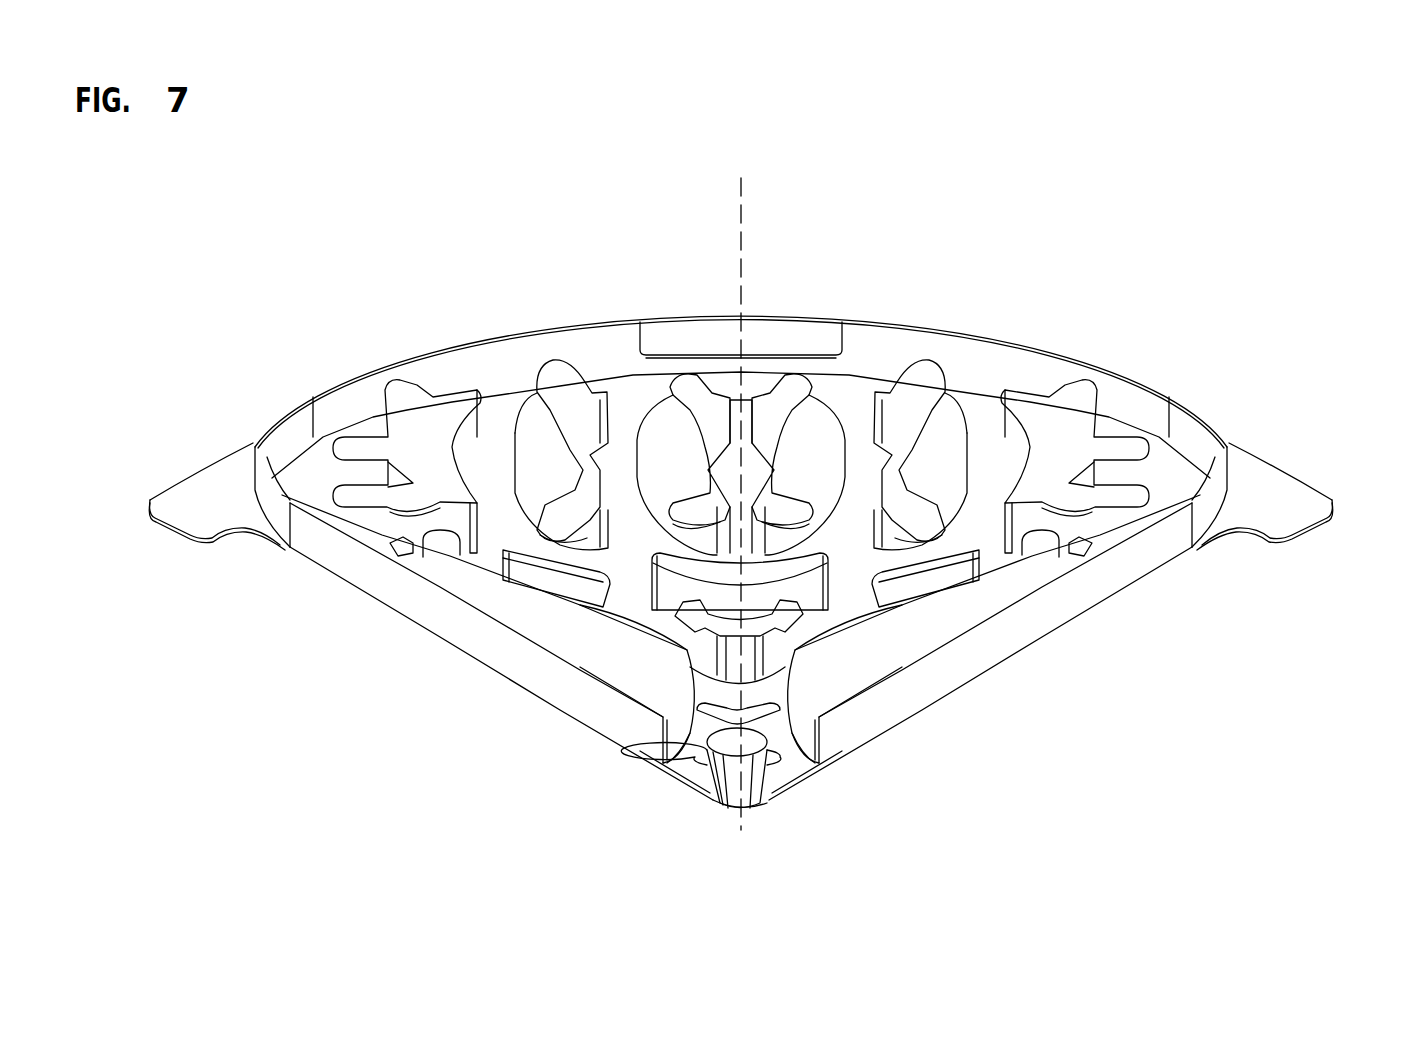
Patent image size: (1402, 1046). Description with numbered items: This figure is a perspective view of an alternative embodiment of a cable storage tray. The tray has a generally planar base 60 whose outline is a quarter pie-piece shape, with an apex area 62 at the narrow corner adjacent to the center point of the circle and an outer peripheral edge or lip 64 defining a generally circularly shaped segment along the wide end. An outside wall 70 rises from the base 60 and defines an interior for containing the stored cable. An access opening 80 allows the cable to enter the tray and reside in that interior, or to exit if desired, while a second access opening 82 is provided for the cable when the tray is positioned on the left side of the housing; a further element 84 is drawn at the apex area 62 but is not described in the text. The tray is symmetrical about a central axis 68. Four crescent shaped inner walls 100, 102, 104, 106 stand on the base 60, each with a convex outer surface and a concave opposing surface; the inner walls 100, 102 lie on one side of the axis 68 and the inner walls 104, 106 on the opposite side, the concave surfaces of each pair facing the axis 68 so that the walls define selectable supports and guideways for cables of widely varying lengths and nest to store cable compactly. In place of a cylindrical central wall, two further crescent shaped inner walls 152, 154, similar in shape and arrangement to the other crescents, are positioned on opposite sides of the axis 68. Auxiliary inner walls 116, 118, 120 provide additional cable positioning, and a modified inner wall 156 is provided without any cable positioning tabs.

The base 60 is at (1283, 477).
The apex area 62 is at (747, 807).
The outer peripheral edge or lip 64 is at (207, 470).
The central axis 68 is at (743, 210).
The outside wall 70 is at (1083, 600).
The access opening 80 is at (687, 767).
The second access opening 82 is at (794, 768).
The center post 84 is at (720, 787).
The crescent shaped inner wall 100 is at (431, 435).
The crescent shaped inner wall 102 is at (558, 432).
The crescent shaped inner wall 104 is at (932, 435).
The crescent shaped inner wall 106 is at (1063, 440).
The auxiliary inner wall 116 is at (549, 575).
The auxiliary inner wall 118 is at (947, 580).
The auxiliary inner wall 120 is at (700, 647).
The crescent shaped inner wall 152 is at (650, 414).
The crescent shaped inner wall 154 is at (828, 417).
The modified inner wall 156 is at (810, 607).